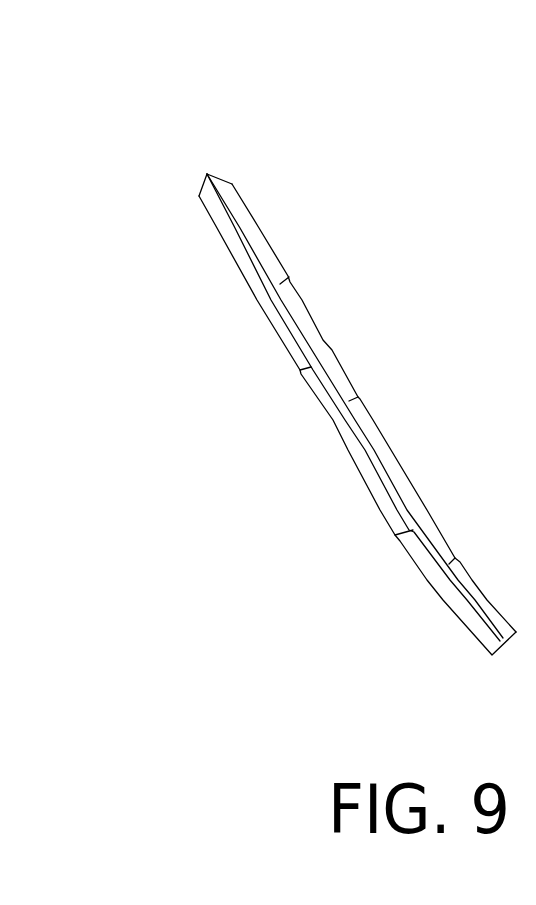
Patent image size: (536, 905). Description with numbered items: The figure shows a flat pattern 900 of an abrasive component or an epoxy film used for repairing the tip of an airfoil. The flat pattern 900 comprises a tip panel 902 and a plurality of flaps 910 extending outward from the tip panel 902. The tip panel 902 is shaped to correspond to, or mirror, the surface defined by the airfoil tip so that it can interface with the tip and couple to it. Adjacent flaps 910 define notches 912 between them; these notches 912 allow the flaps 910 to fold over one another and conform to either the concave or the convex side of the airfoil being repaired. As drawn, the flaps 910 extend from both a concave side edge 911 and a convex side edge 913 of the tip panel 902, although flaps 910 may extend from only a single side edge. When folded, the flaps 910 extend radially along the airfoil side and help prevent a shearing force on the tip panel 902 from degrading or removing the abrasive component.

The flat pattern 900 is at (232, 94).
The tip panel 902 is at (323, 339).
The flaps 910 is at (396, 475).
The concave side edge 911 is at (366, 419).
The notches 912 is at (292, 278).
The convex side edge 913 is at (367, 458).